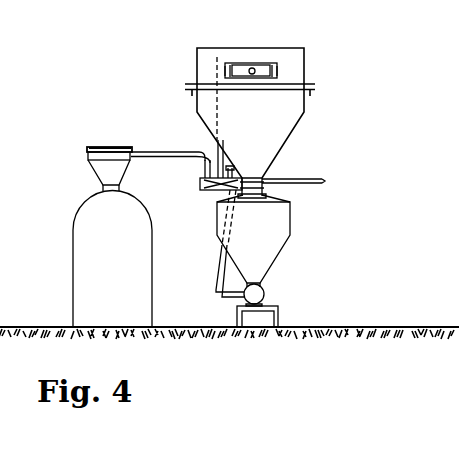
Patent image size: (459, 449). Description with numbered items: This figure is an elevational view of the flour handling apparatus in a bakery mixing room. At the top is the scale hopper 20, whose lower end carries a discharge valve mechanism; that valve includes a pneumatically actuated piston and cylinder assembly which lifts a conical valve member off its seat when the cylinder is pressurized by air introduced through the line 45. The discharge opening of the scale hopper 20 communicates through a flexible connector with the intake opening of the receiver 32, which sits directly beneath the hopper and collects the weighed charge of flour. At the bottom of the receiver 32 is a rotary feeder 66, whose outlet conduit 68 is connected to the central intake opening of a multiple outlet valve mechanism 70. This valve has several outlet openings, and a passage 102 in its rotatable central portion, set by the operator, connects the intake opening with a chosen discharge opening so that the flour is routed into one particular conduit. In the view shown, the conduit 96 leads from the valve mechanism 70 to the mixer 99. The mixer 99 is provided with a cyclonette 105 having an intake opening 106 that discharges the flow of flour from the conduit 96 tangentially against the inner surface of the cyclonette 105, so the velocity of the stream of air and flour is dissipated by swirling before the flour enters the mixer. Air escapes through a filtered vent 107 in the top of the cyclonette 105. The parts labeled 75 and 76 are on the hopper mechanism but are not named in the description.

The scale hopper 20 is at (262, 139).
The receiver 32 is at (262, 261).
The line 45 is at (296, 179).
The rotary feeder 66 is at (265, 294).
The outlet conduit 68 is at (218, 272).
The multiple outlet valve mechanism 70 is at (199, 186).
The vibrator 75 is at (273, 60).
The vibrator pivot 76 is at (252, 75).
The conduit 96 is at (197, 152).
The mixer 99 is at (77, 253).
The passage 102 is at (212, 191).
The cyclonette 105 is at (95, 169).
The intake opening 106 is at (134, 151).
The filtered vent 107 is at (100, 147).